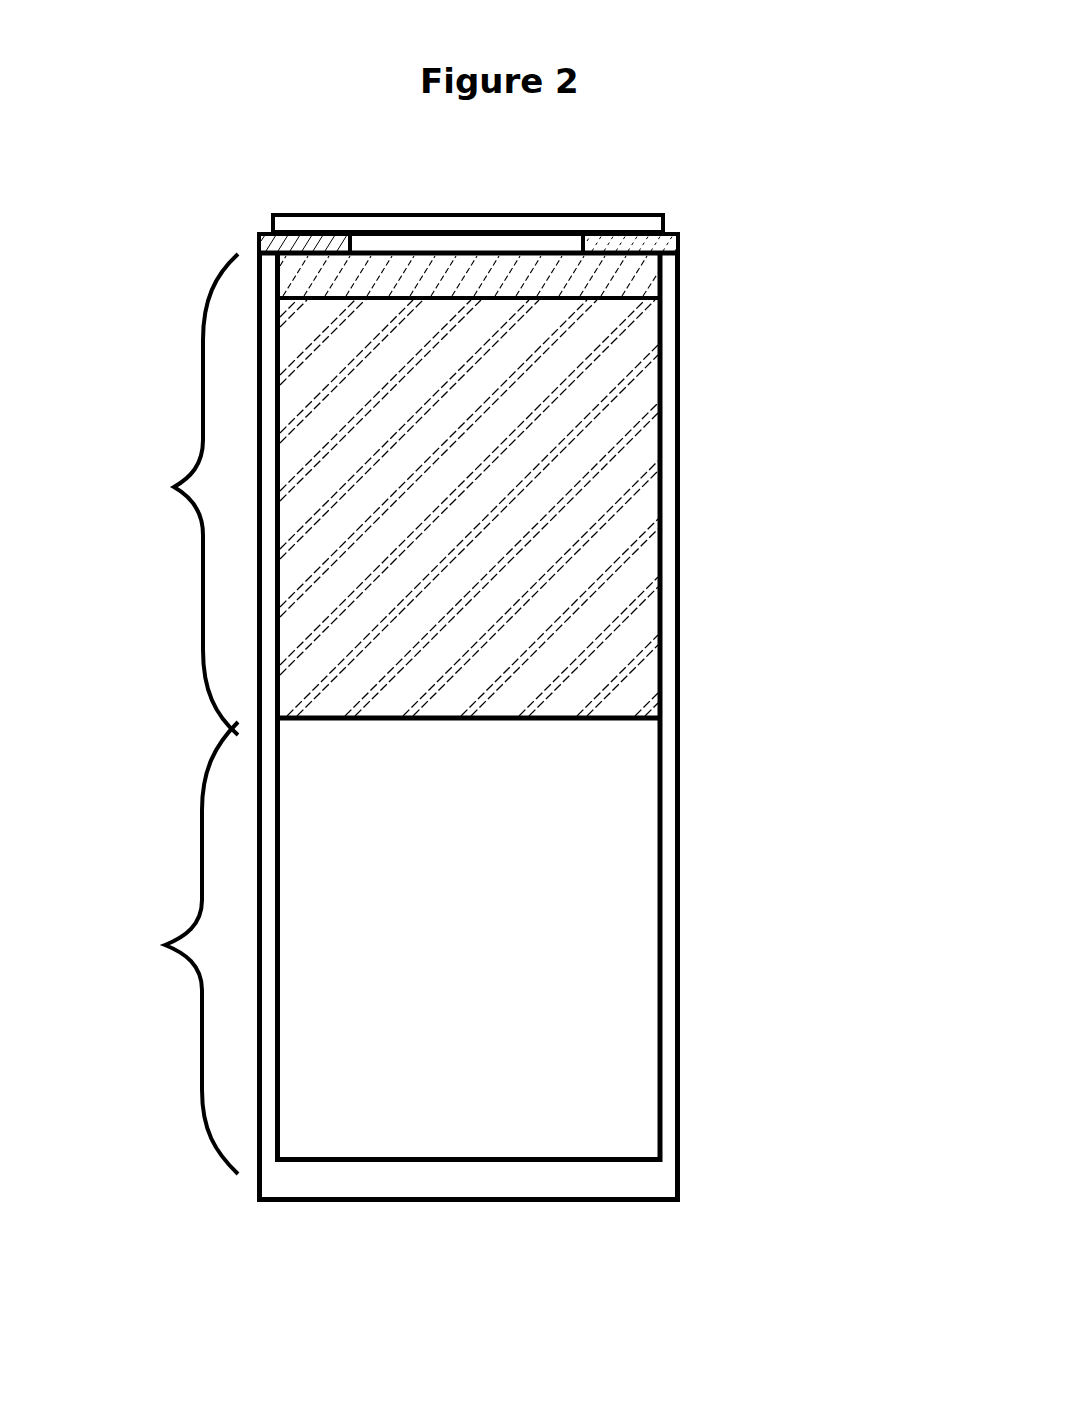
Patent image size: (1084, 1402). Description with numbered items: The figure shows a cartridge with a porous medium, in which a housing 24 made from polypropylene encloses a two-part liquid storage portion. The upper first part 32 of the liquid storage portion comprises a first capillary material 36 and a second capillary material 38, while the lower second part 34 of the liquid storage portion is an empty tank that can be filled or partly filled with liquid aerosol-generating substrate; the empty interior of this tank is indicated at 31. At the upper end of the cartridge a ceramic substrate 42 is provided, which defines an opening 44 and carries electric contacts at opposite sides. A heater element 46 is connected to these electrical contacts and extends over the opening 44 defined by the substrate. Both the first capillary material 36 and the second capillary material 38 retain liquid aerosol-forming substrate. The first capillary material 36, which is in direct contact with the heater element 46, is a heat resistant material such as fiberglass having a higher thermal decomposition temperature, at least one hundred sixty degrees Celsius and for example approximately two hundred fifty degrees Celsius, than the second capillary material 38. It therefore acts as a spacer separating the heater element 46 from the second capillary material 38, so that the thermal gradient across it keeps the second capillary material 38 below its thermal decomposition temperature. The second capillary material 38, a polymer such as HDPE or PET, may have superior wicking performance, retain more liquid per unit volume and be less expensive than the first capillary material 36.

The housing 24 is at (680, 1178).
The interior cavity 31 is at (577, 962).
The first part of the liquid storage portion 32 is at (144, 494).
The second part of the liquid storage portion 34 is at (141, 948).
The first capillary material 36 is at (567, 282).
The second capillary material 38 is at (575, 630).
The ceramic substrate 42 is at (630, 243).
The opening 44 is at (400, 240).
The heater element 46 is at (562, 212).